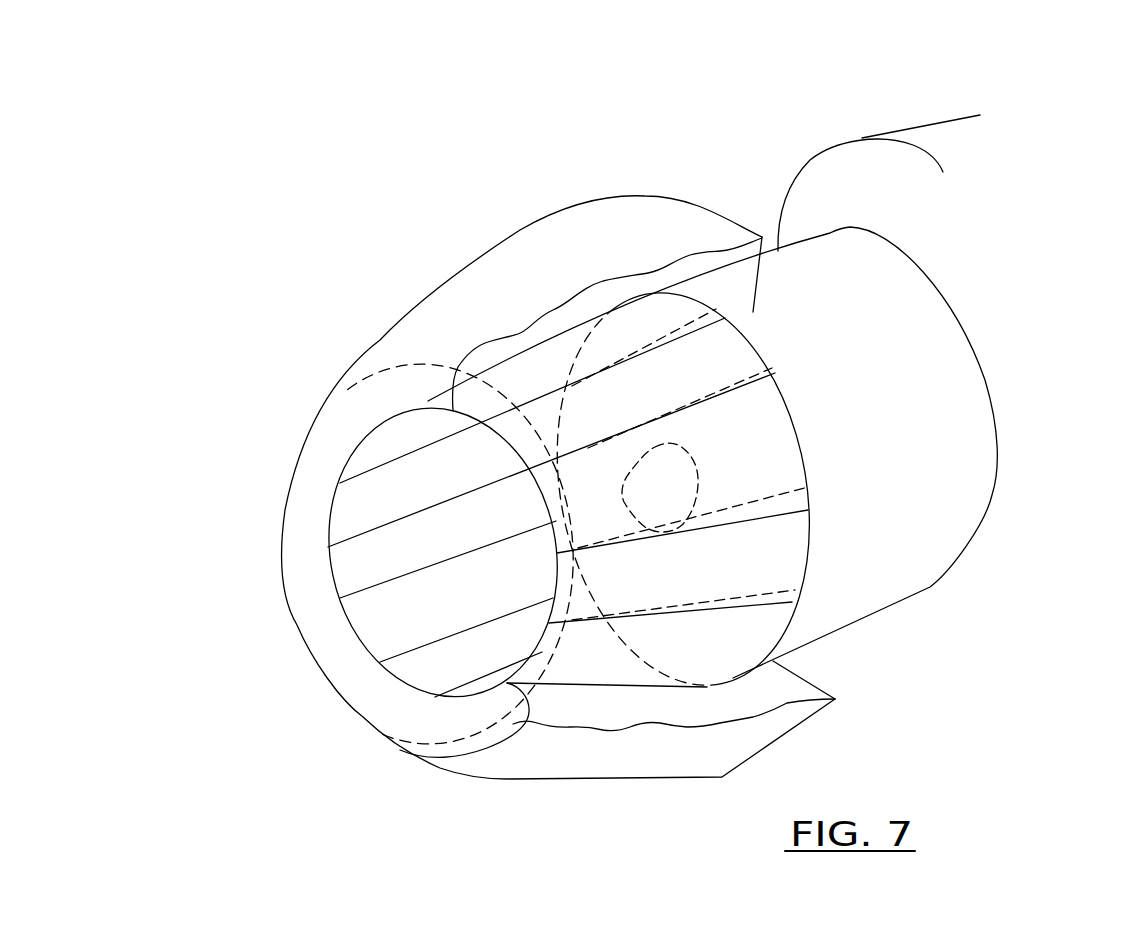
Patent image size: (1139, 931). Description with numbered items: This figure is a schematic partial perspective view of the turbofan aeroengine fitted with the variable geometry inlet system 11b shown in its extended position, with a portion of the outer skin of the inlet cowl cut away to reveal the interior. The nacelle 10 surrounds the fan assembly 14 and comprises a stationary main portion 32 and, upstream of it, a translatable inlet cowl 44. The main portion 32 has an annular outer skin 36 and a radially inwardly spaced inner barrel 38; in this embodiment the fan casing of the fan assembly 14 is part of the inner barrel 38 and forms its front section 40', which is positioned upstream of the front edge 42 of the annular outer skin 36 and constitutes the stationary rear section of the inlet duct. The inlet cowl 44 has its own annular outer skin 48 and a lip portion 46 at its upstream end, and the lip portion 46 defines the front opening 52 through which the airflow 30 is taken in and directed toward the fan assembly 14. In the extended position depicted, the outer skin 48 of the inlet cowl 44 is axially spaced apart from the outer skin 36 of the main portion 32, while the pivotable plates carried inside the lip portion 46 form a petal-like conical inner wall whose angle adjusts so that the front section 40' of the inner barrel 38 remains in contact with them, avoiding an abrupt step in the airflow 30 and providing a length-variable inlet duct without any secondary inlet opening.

The nacelle 10 is at (935, 105).
The variable geometry inlet system 11b is at (590, 133).
The fan assembly 14 is at (973, 478).
The airflow 30 is at (405, 557).
The main portion 32 is at (898, 128).
The annular outer skin 36 is at (943, 151).
The inner barrel 38 is at (953, 360).
The front section 40' is at (868, 461).
The front edge 42 is at (805, 165).
The inlet cowl 44 is at (603, 760).
The lip portion 46 is at (393, 723).
The annular outer skin 48 is at (515, 262).
The front opening 52 is at (450, 620).